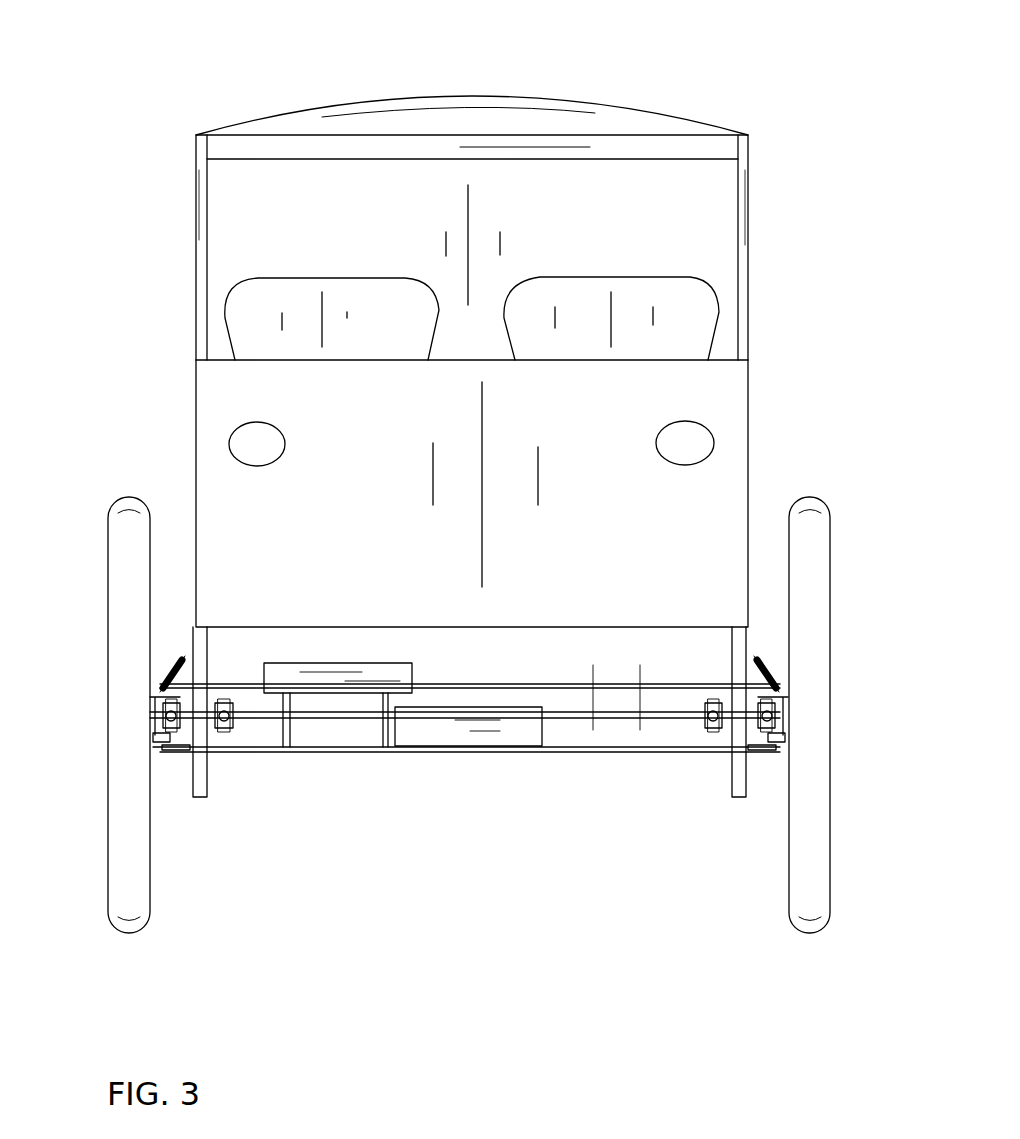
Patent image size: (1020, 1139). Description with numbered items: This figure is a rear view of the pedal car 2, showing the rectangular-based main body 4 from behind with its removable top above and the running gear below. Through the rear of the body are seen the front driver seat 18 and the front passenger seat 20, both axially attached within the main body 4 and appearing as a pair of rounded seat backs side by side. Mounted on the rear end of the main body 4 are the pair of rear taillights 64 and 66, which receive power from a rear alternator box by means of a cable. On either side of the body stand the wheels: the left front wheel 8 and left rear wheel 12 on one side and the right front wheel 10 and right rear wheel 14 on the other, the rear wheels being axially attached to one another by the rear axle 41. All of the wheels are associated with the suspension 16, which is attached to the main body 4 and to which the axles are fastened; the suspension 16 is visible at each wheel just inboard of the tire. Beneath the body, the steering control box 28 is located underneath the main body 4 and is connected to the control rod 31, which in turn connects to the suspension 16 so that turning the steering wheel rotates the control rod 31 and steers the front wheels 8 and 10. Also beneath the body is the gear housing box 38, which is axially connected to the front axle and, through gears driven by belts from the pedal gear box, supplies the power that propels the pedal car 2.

The pedal car 2 is at (758, 50).
The main body 4 is at (537, 100).
The left front wheel 8 is at (87, 715).
The left rear wheel 12 is at (122, 648).
The right front wheel 10 is at (862, 715).
The right rear wheel 14 is at (818, 648).
The suspension 16 is at (150, 676).
The front driver seat 18 is at (261, 305).
The front passenger seat 20 is at (698, 313).
The steering control box 28 is at (320, 683).
The control rod 31 is at (247, 686).
The gear housing box 38 is at (478, 733).
The rear axle 41 is at (619, 643).
The rear taillight 64 is at (240, 445).
The rear taillight 66 is at (696, 443).